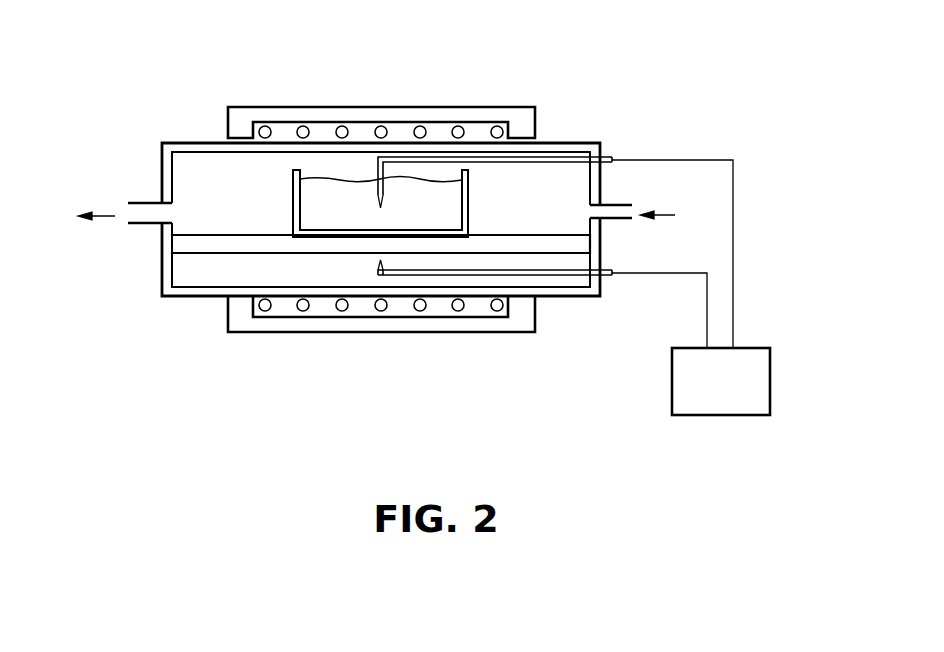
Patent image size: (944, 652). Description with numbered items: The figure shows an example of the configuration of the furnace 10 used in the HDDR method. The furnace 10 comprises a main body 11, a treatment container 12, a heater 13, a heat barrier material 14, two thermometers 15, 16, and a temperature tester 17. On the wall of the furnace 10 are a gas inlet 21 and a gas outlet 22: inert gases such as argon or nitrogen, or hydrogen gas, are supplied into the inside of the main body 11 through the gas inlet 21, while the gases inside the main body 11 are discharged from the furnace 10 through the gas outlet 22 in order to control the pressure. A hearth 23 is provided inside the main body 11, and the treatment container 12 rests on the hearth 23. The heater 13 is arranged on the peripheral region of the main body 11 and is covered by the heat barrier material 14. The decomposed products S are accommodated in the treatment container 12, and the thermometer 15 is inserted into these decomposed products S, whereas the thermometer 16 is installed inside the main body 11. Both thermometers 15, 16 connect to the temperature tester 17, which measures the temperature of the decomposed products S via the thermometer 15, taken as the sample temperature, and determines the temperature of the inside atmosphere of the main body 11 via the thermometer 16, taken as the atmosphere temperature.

The furnace 10 is at (510, 96).
The main body 11 is at (200, 142).
The treatment container 12 is at (294, 207).
The heater 13 is at (424, 126).
The heat barrier material 14 is at (463, 106).
The thermometer 15 is at (378, 172).
The thermometer 16 is at (376, 268).
The temperature tester 17 is at (758, 348).
The gas inlet 21 is at (618, 205).
The gas outlet 22 is at (146, 203).
The hearth 23 is at (232, 236).
The decomposed products S is at (322, 187).